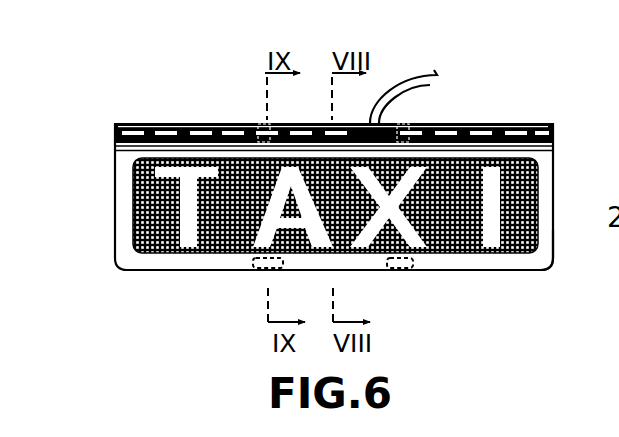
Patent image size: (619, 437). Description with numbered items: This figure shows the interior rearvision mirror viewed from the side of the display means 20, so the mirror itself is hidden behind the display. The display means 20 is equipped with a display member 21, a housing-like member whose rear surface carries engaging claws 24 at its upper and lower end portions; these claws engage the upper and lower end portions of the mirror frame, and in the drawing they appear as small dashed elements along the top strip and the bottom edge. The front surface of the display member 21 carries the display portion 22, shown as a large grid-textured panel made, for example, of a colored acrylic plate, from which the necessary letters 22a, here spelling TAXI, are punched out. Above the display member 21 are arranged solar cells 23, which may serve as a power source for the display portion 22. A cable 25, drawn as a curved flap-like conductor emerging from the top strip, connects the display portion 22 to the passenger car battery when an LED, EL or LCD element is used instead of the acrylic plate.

The display means 20 is at (112, 262).
The display member 21 is at (543, 243).
The display portion 22 is at (457, 240).
The letters 22a is at (187, 212).
The solar cells 23 is at (503, 122).
The engaging claws 24 is at (262, 124).
The cable 25 is at (445, 88).